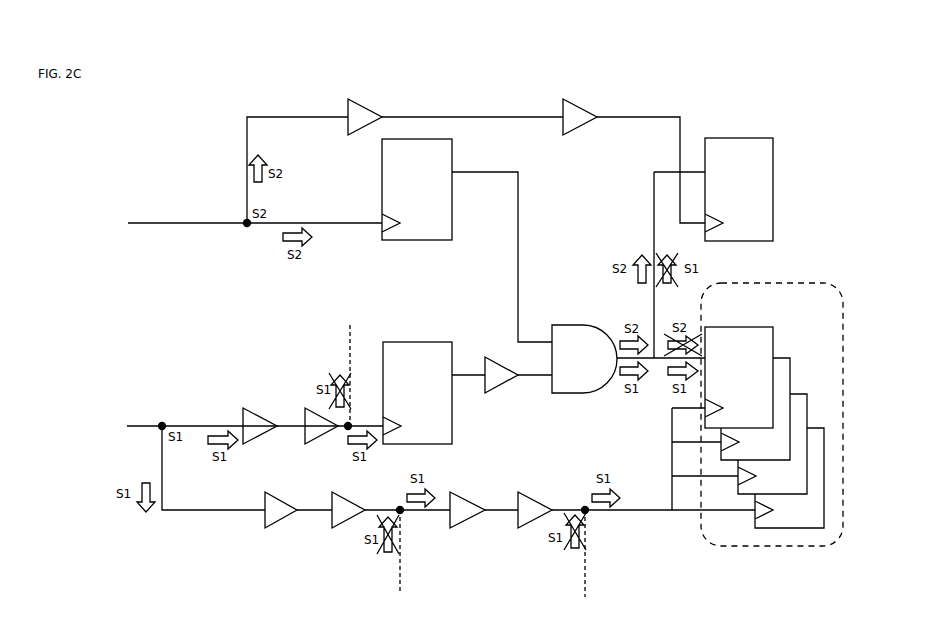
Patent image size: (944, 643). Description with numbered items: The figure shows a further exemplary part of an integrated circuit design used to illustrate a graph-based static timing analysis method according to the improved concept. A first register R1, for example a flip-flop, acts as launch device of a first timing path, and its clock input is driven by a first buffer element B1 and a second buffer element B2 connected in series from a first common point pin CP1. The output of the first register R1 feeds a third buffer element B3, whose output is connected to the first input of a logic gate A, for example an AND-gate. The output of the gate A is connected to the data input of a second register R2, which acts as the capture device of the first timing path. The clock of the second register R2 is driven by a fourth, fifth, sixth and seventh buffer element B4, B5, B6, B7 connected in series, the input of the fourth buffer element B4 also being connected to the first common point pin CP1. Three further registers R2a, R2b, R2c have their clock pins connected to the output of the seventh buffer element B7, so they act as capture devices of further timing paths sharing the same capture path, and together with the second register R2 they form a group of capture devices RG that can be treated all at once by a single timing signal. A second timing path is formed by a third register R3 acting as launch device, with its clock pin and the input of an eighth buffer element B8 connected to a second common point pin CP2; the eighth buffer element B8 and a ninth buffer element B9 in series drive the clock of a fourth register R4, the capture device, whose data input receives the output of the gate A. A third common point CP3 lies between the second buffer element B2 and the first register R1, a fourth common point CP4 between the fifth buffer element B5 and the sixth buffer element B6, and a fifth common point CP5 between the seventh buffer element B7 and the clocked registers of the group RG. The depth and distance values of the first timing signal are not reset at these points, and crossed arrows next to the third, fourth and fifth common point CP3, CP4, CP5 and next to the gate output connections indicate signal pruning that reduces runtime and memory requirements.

The first buffer element B1 is at (260, 426).
The second buffer element B2 is at (321, 426).
The third buffer element B3 is at (501, 375).
The fourth buffer element B4 is at (281, 510).
The fifth buffer element B5 is at (348, 510).
The sixth buffer element B6 is at (467, 510).
The seventh buffer element B7 is at (535, 510).
The eighth buffer element B8 is at (365, 117).
The ninth buffer element B9 is at (580, 117).
The first register R1 is at (417, 384).
The second register R2 is at (739, 368).
The third register R3 is at (417, 180).
The fourth register R4 is at (739, 180).
The further register R2a is at (763, 401).
The further register R2b is at (778, 436).
The further register R2c is at (795, 470).
The group of capture devices RG is at (772, 414).
The logic gate A is at (584, 350).
The first common point pin CP1 is at (156, 418).
The second common point pin CP2 is at (235, 217).
The third common point CP3 is at (360, 419).
The fourth common point CP4 is at (392, 502).
The fifth common point CP5 is at (575, 502).